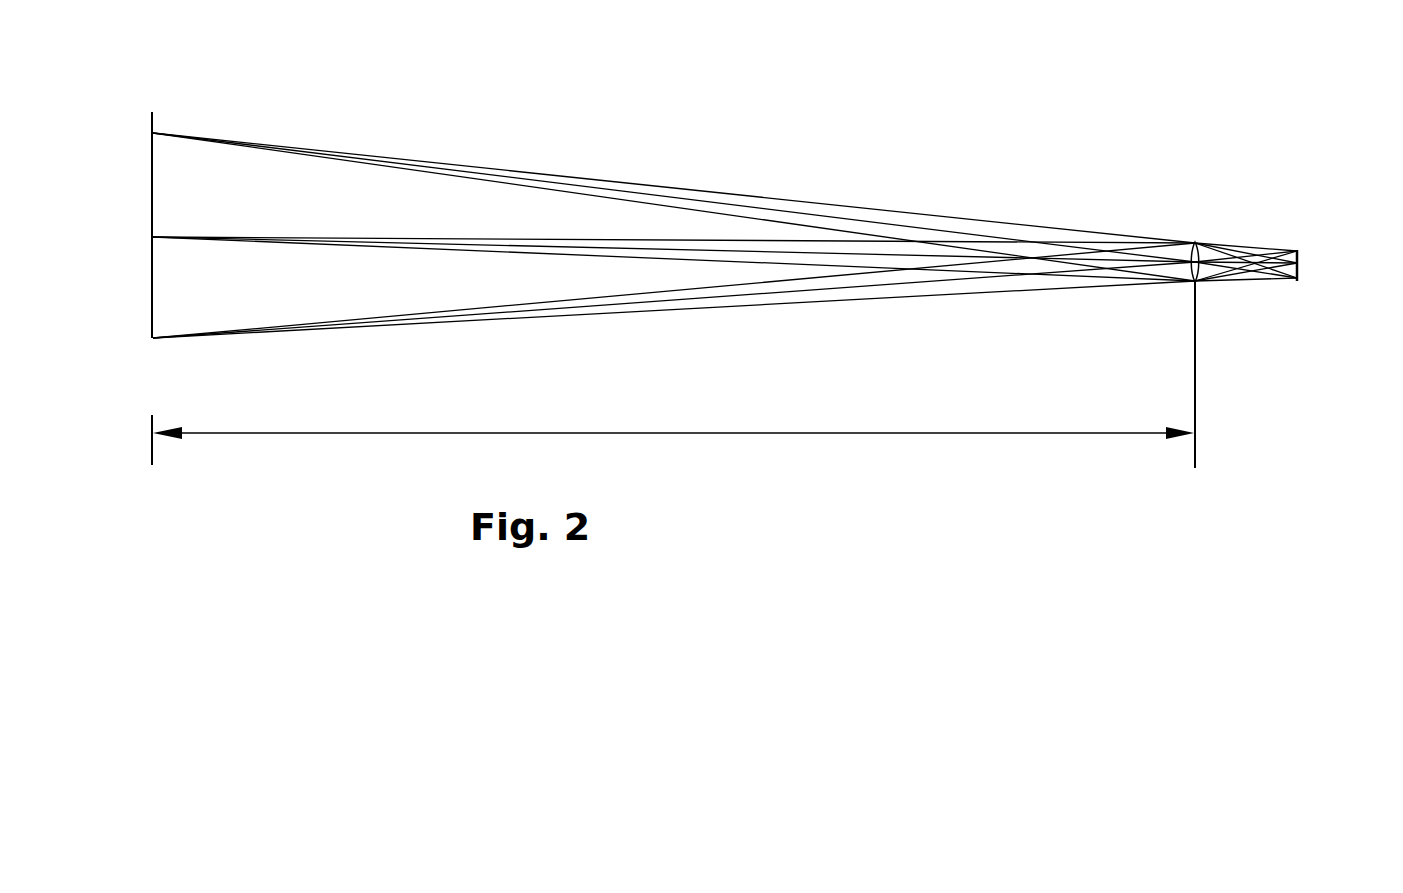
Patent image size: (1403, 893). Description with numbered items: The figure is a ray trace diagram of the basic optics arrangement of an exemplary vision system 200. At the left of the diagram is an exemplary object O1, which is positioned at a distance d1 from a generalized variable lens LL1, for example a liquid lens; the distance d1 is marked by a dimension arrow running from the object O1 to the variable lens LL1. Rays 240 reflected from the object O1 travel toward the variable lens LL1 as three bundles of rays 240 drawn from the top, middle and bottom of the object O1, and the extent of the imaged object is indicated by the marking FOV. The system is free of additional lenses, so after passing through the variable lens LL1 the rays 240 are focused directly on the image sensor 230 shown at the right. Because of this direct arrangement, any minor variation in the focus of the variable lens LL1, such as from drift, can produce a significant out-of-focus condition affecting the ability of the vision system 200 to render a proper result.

The vision system 200 is at (1140, 185).
The image sensor 230 is at (1298, 263).
The rays 240 is at (540, 290).
The variable lens LL1 is at (1208, 243).
The object O1 is at (144, 158).
The field of view FOV is at (152, 360).
The distance d1 is at (596, 434).